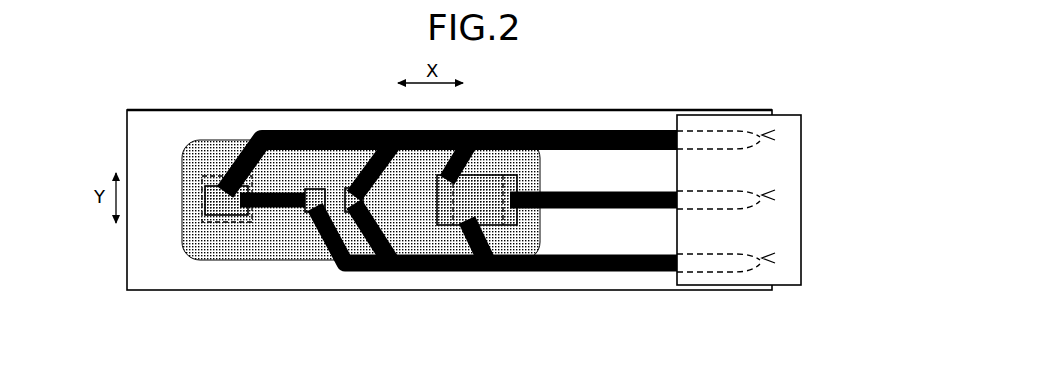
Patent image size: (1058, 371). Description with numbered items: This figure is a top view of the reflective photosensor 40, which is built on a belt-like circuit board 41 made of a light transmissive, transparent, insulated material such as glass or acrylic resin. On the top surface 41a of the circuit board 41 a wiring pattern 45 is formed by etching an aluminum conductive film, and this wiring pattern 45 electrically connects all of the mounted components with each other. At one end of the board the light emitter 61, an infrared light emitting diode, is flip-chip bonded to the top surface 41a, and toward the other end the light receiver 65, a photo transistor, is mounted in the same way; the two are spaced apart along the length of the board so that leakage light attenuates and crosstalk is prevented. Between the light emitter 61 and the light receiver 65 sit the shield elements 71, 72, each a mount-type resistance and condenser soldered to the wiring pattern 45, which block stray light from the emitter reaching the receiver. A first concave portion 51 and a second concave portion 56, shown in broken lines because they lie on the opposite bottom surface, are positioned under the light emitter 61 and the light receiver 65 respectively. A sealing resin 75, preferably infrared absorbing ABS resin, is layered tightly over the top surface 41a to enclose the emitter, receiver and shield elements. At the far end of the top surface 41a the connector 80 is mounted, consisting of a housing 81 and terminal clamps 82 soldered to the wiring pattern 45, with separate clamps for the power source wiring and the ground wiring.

The reflective photosensor 40 is at (167, 92).
The circuit board 41 is at (548, 120).
The top surface 41a is at (610, 120).
The wiring pattern 45 is at (438, 272).
The first concave portion 51 is at (206, 178).
The second concave portion 56 is at (490, 170).
The light emitter 61 is at (215, 200).
The light receiver 65 is at (483, 212).
The shield element 71 is at (302, 215).
The shield element 72 is at (358, 205).
The sealing resin 75 is at (240, 242).
The connector 80 is at (787, 292).
The housing 81 is at (714, 278).
The terminal clamps 82 is at (818, 258).